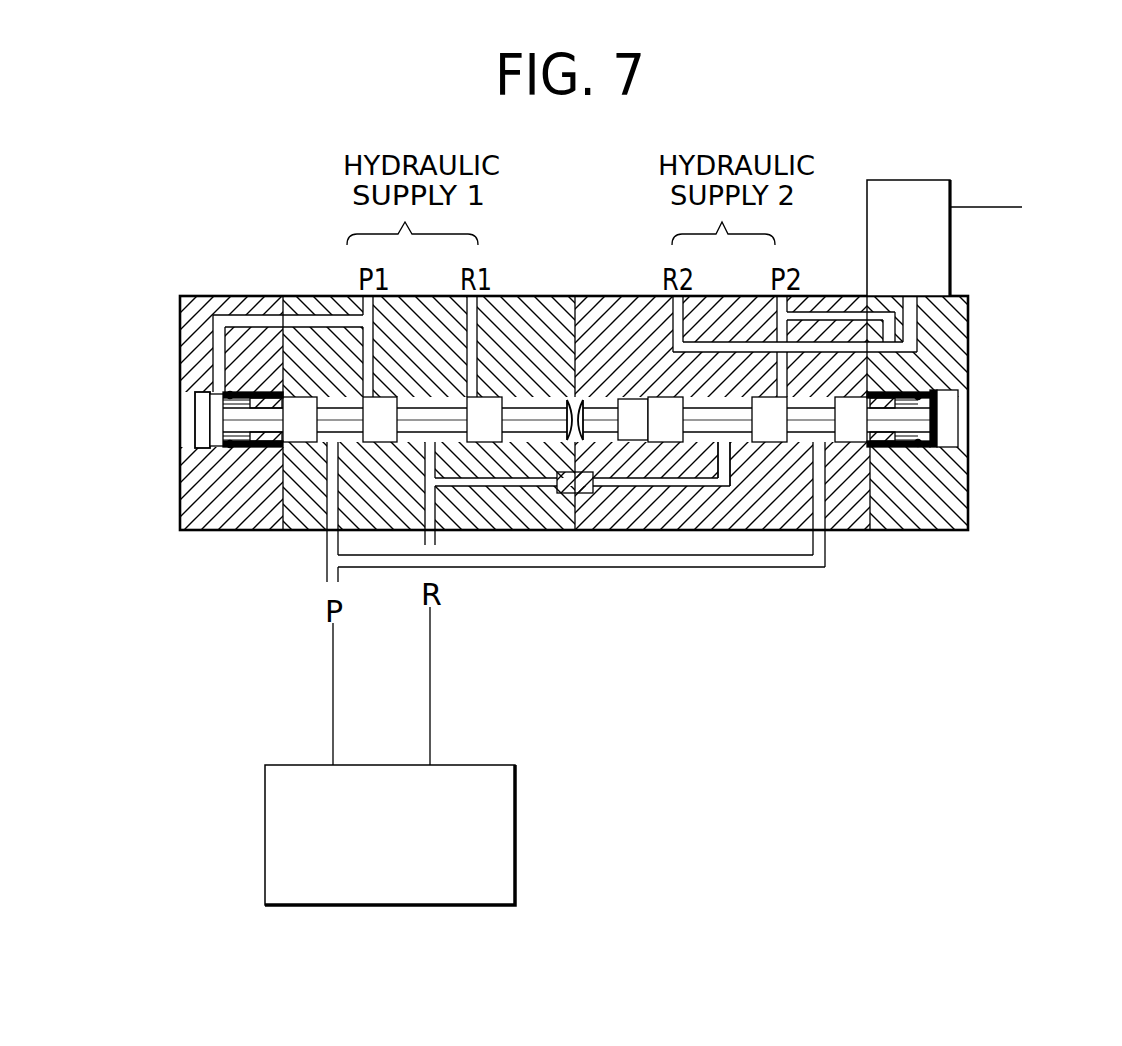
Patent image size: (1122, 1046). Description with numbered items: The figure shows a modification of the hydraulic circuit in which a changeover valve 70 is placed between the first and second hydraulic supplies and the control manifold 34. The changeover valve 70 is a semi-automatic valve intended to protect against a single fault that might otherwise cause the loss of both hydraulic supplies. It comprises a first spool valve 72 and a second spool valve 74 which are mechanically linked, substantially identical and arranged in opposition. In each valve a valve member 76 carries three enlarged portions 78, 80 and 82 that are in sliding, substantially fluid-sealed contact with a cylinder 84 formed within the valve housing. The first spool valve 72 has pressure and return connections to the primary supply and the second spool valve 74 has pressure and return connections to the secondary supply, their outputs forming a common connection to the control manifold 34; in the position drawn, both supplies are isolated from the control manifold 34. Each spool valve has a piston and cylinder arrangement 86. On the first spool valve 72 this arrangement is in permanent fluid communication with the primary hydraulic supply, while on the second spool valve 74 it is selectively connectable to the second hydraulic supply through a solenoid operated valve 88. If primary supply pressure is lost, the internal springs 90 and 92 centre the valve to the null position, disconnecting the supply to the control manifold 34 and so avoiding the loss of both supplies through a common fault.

The control manifold 34 is at (520, 797).
The changeover valve 70 is at (630, 462).
The first spool valve 72 is at (303, 507).
The second spool valve 74 is at (852, 443).
The valve member 76 is at (737, 443).
The enlarged portion 78 is at (662, 443).
The enlarged portion 80 is at (778, 443).
The enlarged portion 82 is at (855, 443).
The cylinder 84 is at (632, 443).
The piston and cylinder arrangement 86 is at (193, 420).
The solenoid operated valve 88 is at (925, 240).
The internal spring 90 is at (233, 448).
The internal spring 92 is at (930, 397).